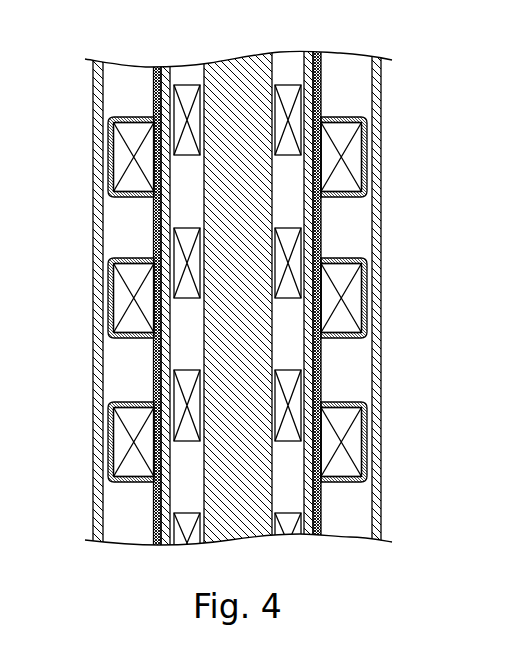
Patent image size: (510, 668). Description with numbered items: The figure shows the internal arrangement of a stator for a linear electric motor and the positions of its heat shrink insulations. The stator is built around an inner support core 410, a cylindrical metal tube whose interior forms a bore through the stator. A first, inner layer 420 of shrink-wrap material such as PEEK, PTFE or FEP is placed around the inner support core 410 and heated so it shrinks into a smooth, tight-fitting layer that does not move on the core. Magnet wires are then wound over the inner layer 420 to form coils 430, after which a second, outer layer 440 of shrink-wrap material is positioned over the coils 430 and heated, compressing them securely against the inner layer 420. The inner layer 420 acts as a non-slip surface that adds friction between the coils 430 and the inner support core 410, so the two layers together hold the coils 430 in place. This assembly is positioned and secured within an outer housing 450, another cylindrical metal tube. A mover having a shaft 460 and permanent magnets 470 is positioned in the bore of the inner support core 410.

The inner support core 410 is at (153, 372).
The inner layer 420 is at (153, 92).
The coils 430 is at (115, 303).
The outer layer 440 is at (118, 116).
The outer housing 450 is at (93, 417).
The shaft 460 is at (203, 199).
The permanent magnets 470 is at (184, 224).